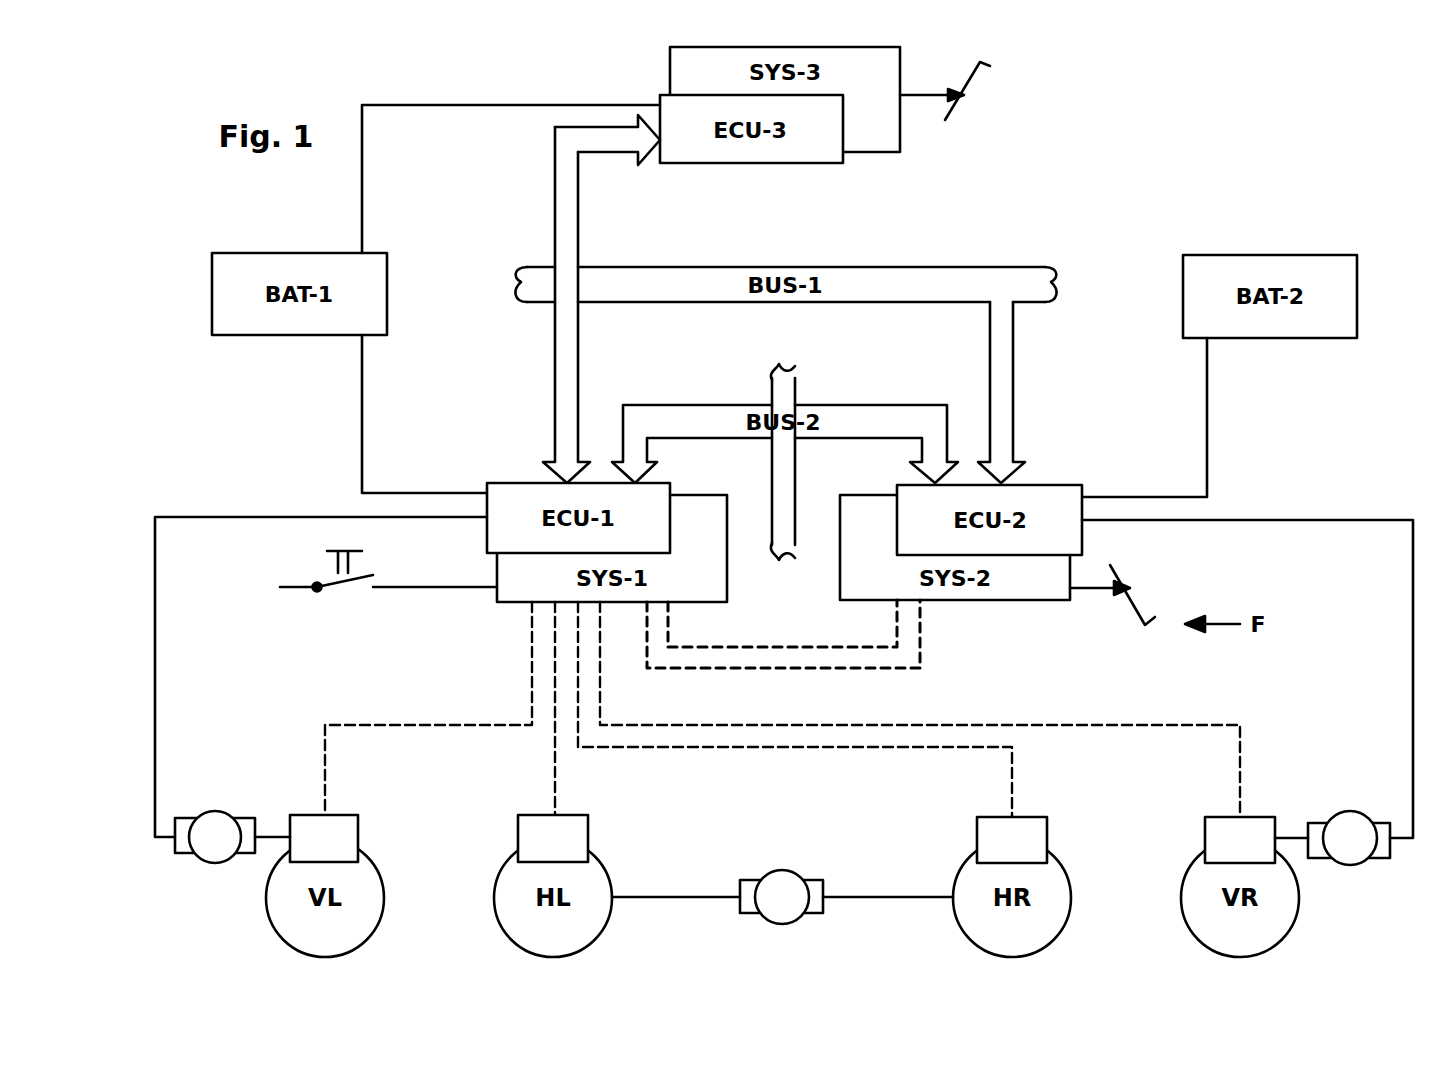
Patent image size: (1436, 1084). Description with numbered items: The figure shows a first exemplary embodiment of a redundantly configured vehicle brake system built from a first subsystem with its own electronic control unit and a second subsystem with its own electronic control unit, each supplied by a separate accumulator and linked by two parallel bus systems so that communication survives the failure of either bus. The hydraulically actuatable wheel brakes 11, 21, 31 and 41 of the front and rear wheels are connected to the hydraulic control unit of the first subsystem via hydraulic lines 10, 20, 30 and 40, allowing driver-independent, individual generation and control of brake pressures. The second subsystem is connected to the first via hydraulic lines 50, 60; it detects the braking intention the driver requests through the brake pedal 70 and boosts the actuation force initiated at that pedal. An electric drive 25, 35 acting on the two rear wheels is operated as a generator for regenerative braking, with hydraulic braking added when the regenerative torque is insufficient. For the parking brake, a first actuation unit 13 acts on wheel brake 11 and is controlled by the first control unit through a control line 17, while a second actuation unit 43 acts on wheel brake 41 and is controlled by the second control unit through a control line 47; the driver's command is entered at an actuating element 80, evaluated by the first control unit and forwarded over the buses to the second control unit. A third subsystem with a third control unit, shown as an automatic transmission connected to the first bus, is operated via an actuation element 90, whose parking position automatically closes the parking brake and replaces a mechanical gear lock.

The hydraulic line 10 is at (370, 720).
The wheel brake 11 is at (290, 815).
The first actuation unit 13 is at (187, 812).
The control line 17 is at (210, 515).
The hydraulic line 20 is at (553, 778).
The wheel brake 21 is at (518, 815).
The electric drive 25 is at (737, 895).
The hydraulic line 30 is at (1015, 782).
The wheel brake 31 is at (1047, 817).
The electric drive 35 is at (827, 895).
The hydraulic line 40 is at (1198, 722).
The wheel brake 41 is at (1275, 817).
The second actuation unit 43 is at (1378, 818).
The control line 47 is at (1357, 518).
The hydraulic line 50 is at (767, 647).
The hydraulic line 60 is at (920, 647).
The brake pedal 70 is at (1133, 598).
The actuating element 80 is at (318, 583).
The actuation element 90 is at (968, 85).